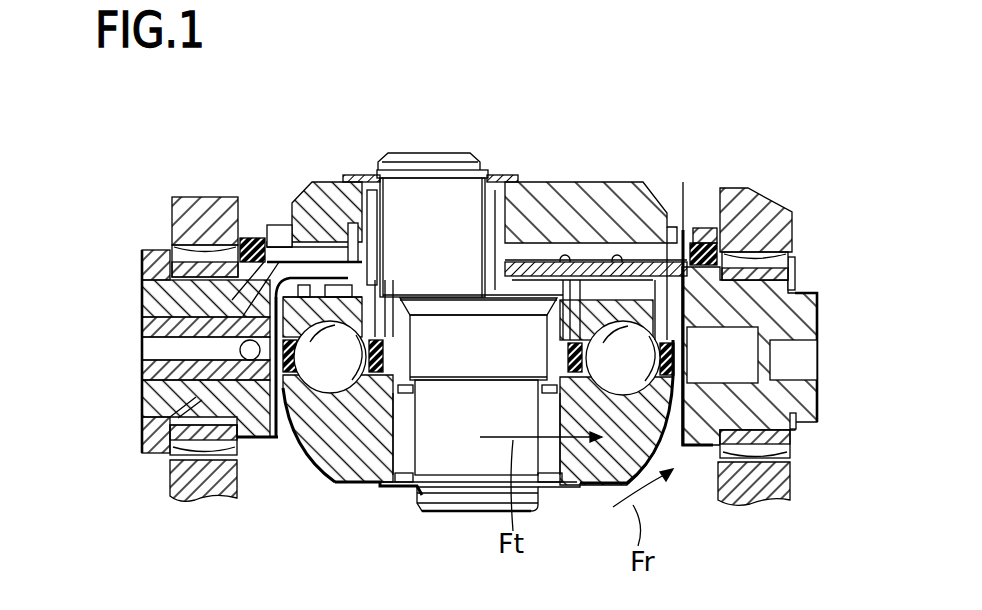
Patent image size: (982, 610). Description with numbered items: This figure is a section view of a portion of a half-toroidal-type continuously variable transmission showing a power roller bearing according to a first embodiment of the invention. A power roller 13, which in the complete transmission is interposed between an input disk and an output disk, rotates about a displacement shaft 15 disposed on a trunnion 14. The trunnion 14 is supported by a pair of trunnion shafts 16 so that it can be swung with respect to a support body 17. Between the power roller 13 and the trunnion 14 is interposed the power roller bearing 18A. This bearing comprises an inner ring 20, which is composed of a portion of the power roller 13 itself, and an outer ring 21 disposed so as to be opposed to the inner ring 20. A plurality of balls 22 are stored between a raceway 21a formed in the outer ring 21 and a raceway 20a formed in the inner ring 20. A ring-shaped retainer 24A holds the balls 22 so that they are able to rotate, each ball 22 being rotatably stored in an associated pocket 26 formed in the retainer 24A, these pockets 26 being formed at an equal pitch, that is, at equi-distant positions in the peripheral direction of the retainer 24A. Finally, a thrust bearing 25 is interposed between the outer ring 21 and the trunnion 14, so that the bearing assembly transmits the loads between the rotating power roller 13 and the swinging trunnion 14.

The power roller 13 is at (332, 405).
The trunnion 14 is at (563, 182).
The displacement shaft 15 is at (448, 474).
The trunnion shafts 16 is at (165, 300).
The support body 17 is at (793, 230).
The power roller bearing 18A is at (673, 312).
The inner ring 20 is at (328, 468).
The raceway 20a is at (290, 407).
The outer ring 21 is at (330, 282).
The raceway 21a is at (288, 276).
The balls 22 is at (343, 492).
The retainer 24A is at (775, 362).
The thrust bearing 25 is at (628, 290).
The pockets 26 is at (355, 395).